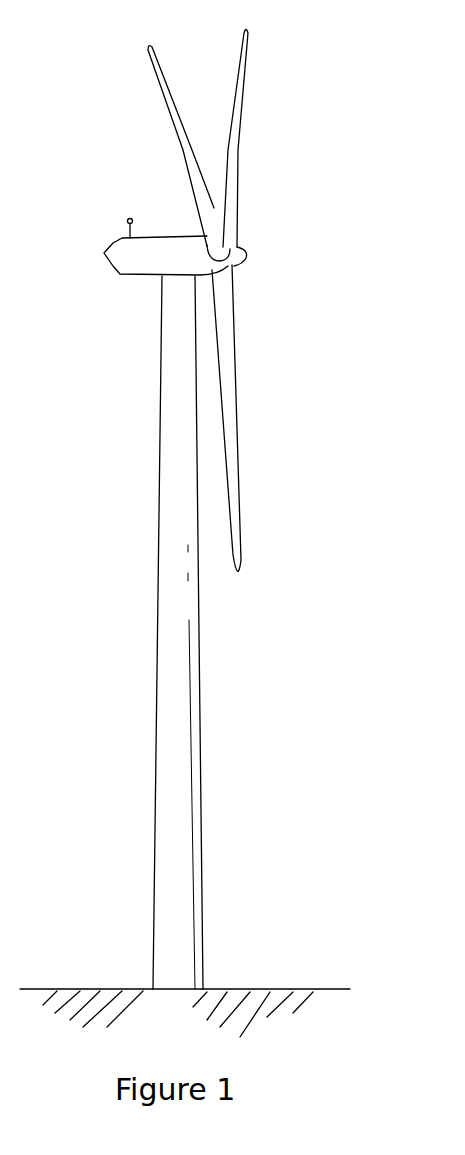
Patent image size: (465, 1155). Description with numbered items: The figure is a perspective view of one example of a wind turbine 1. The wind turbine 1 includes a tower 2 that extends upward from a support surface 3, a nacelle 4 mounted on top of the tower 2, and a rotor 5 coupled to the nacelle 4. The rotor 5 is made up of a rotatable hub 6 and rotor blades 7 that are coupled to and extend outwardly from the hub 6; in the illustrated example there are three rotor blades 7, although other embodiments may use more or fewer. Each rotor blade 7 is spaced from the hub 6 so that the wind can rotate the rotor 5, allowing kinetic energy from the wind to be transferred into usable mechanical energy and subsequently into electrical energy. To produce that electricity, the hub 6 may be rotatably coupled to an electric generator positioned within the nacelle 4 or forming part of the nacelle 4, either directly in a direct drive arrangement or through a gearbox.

The wind turbine 1 is at (348, 97).
The tower 2 is at (166, 729).
The support surface 3 is at (92, 988).
The nacelle 4 is at (140, 277).
The rotor 5 is at (245, 236).
The rotatable hub 6 is at (247, 258).
The rotor blade 7 is at (237, 68).